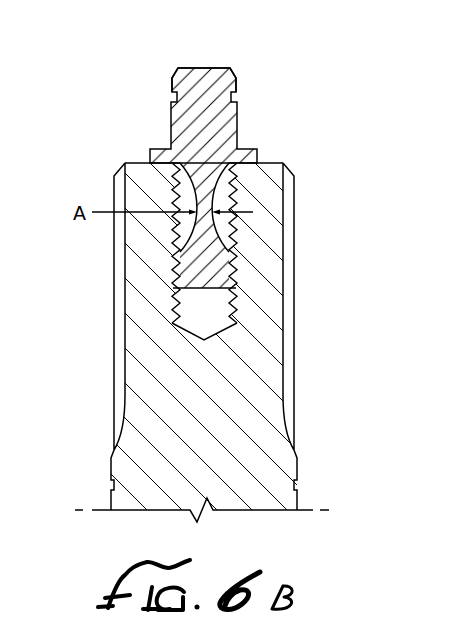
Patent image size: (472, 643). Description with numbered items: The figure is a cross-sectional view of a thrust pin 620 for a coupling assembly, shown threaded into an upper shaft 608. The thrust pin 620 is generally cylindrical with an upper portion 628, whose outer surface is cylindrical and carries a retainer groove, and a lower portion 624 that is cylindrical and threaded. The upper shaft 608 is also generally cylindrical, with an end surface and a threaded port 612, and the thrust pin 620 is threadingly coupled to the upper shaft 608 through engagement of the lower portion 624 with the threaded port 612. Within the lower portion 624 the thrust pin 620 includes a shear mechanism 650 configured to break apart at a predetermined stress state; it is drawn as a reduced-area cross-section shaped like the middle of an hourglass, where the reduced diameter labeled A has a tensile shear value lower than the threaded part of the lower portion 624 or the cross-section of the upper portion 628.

The upper shaft 608 is at (163, 363).
The threaded port 612 is at (213, 317).
The thrust pin 620 is at (234, 163).
The lower portion 624 is at (172, 268).
The upper portion 628 is at (172, 112).
The shear mechanism 650 is at (227, 228).